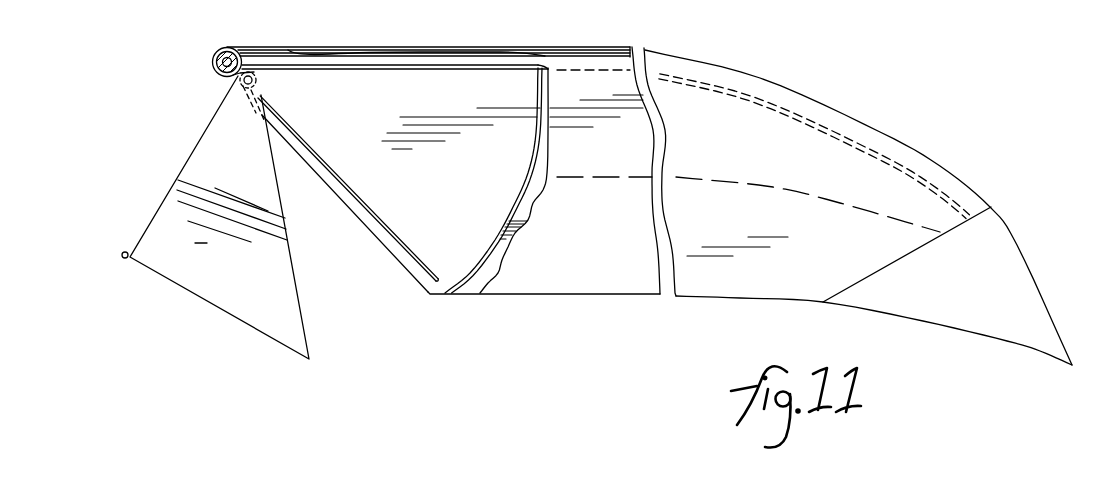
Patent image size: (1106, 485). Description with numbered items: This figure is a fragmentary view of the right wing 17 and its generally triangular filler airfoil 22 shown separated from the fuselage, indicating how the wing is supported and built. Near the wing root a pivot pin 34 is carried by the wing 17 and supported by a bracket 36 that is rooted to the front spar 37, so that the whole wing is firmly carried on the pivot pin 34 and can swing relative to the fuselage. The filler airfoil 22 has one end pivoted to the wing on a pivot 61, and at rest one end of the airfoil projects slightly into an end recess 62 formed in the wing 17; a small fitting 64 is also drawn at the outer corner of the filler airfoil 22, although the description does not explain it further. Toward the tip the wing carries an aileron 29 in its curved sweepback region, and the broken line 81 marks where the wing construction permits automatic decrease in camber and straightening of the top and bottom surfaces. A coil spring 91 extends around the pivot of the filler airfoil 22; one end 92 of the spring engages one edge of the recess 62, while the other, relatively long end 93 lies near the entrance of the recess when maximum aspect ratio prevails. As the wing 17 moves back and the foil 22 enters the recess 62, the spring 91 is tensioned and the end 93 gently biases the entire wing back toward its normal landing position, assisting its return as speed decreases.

The wing 17 is at (552, 47).
The filler airfoil 22 is at (294, 294).
The aileron 29 is at (1016, 246).
The pivot pin 34 is at (227, 55).
The bracket 36 is at (215, 66).
The front spar 37 is at (461, 68).
The pivot 61 is at (257, 80).
The end recess 62 is at (452, 192).
The pin 64 is at (123, 252).
The broken line 81 is at (827, 196).
The coil spring 91 is at (231, 86).
The spring end 92 is at (306, 69).
The spring end 93 is at (383, 226).